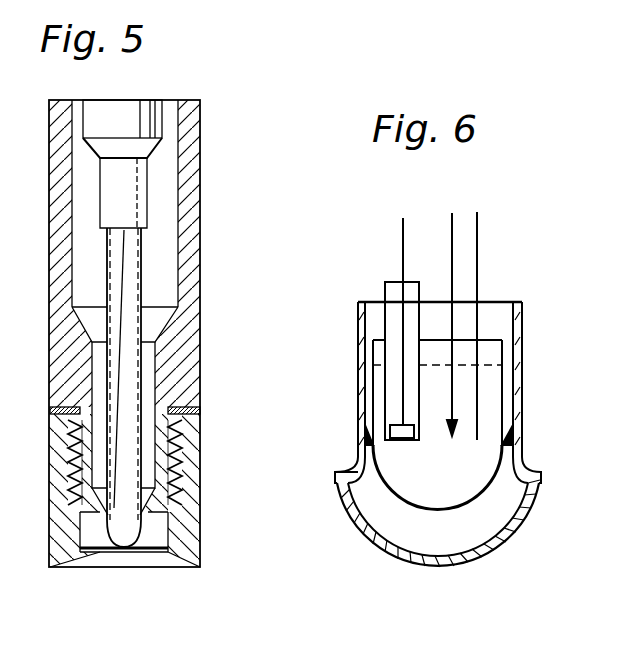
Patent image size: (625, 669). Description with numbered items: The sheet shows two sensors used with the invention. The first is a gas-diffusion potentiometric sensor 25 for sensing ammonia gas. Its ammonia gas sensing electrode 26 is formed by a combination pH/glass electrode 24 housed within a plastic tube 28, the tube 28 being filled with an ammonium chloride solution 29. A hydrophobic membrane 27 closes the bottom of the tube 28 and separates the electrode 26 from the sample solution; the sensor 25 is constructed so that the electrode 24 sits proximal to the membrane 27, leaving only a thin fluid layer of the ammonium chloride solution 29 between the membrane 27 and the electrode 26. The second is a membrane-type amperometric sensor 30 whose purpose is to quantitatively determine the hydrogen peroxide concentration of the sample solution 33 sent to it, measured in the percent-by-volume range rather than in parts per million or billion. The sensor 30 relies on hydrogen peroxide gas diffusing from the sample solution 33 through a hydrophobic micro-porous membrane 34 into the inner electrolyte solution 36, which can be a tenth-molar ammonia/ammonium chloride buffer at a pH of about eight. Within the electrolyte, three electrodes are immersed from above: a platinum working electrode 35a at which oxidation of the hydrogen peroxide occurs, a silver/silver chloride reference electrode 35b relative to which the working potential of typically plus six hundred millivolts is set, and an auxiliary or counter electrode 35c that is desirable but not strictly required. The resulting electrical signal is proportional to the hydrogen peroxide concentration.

In FIG. 5, the combination pH/glass electrode 24 is at (138, 262).
In FIG. 5, the gas-diffusion potentiometric sensor 25 is at (205, 132).
In FIG. 5, the ammonia gas sensing electrode 26 is at (92, 380).
In FIG. 5, the hydrophobic membrane 27 is at (107, 555).
In FIG. 5, the plastic tube 28 is at (160, 372).
In FIG. 5, the ammonium chloride solution 29 is at (86, 292).
In FIG. 6, the amperometric sensor 30 is at (523, 301).
In FIG. 6, the sample solution 33 is at (441, 530).
In FIG. 6, the hydrophobic micro-porous membrane 34 is at (398, 497).
In FIG. 6, the platinum working electrode 35a is at (398, 232).
In FIG. 6, the Ag/AgCl reference electrode 35b is at (452, 225).
In FIG. 6, the auxiliary (or counter) electrode 35c is at (480, 242).
In FIG. 6, the inner electrolyte solution 36 is at (457, 470).